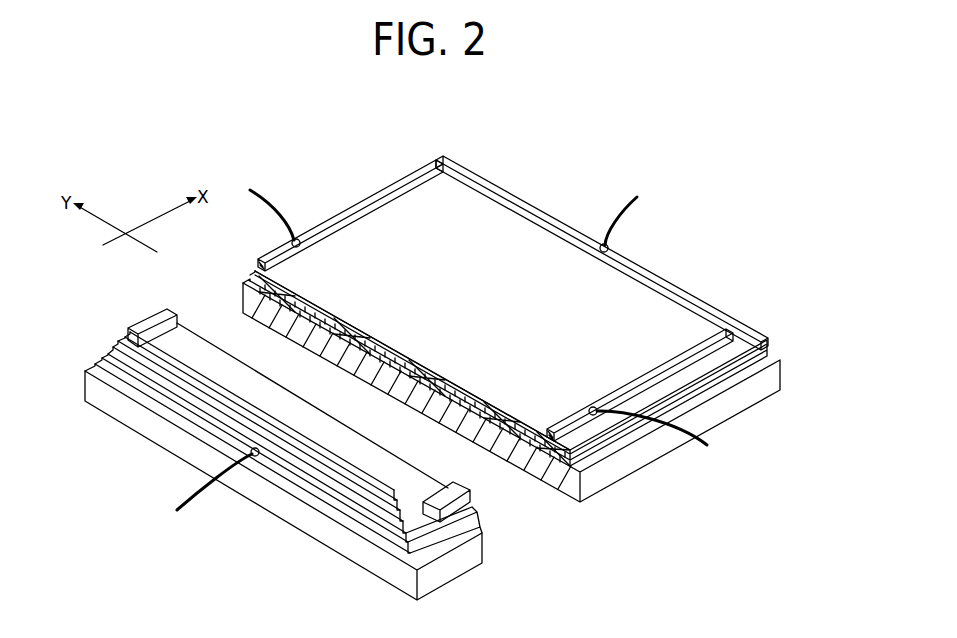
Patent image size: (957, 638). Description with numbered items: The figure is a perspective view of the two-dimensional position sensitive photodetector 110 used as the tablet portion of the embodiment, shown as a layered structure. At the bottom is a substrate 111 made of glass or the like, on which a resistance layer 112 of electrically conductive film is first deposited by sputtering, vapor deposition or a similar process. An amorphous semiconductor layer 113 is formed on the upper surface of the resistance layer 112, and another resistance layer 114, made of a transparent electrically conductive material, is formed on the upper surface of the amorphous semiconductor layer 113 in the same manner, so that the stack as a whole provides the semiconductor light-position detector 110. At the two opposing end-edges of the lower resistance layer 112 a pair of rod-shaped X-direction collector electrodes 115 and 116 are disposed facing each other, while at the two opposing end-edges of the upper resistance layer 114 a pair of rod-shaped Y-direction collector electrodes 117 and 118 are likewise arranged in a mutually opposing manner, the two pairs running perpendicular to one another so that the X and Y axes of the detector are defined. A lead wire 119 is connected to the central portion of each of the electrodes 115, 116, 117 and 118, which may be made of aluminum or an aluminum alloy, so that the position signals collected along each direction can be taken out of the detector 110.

The position sensitive photodetector 110 is at (510, 152).
The substrate 111 is at (377, 380).
The resistance layer 112 is at (423, 390).
The amorphous semiconductor layer 113 is at (455, 405).
The resistance layer 114 is at (500, 430).
The X-direction collector electrode 115 is at (293, 470).
The X-direction collector electrode 116 is at (722, 310).
The Y-direction collector electrode 117 is at (367, 202).
The Y-direction collector electrode 118 is at (722, 340).
The lead wire 119 is at (268, 205).